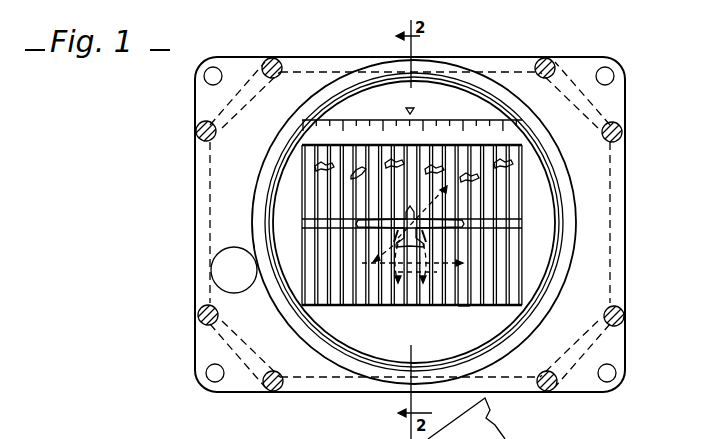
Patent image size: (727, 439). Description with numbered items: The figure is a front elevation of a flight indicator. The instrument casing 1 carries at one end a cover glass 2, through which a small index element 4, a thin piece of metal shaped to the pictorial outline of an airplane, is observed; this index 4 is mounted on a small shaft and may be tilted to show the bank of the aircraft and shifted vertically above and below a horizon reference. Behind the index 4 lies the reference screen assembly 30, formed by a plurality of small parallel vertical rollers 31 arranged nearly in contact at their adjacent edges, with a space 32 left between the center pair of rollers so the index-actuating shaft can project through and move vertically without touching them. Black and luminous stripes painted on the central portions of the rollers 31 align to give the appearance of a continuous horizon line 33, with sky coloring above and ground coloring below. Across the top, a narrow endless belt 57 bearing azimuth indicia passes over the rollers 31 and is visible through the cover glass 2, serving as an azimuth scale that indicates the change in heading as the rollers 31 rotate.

The instrument casing 1 is at (203, 260).
The cover glass 2 is at (383, 345).
The index element 4 is at (447, 229).
The reference screen assembly 30 is at (463, 306).
The rollers 31 is at (493, 306).
The space 32 is at (404, 305).
The horizon line 33 is at (520, 222).
The endless belt 57 is at (421, 115).